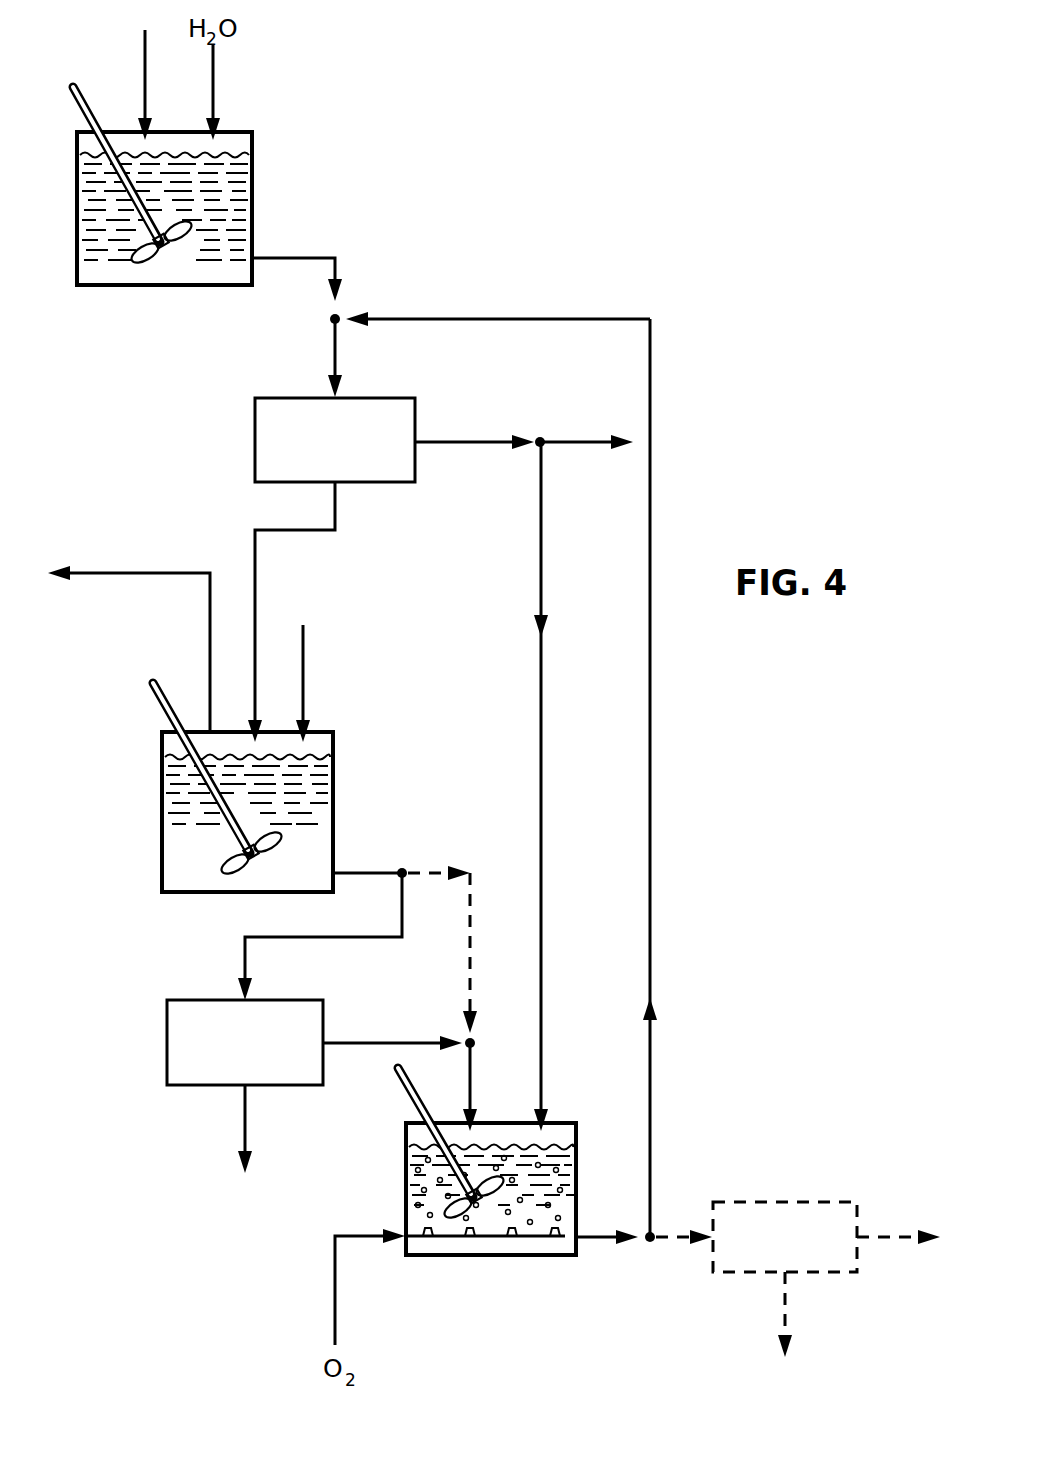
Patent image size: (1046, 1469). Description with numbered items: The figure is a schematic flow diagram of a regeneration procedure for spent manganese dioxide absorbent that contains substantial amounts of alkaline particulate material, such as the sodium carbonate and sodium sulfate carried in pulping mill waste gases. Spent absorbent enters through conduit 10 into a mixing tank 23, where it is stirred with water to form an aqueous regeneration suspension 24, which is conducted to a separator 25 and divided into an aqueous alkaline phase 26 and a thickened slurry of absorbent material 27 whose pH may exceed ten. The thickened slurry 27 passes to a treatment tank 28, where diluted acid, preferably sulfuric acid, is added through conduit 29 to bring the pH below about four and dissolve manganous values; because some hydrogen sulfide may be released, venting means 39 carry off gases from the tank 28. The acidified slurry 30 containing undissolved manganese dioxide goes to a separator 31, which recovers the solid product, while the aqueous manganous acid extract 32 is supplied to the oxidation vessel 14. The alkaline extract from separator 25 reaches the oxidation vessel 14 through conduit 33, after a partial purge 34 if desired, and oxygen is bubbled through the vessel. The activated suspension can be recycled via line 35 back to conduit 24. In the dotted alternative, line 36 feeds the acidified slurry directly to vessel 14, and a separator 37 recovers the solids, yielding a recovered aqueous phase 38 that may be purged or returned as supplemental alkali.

The conduit 10 is at (144, 65).
The mixing tank 23 is at (243, 171).
The suspension 24 is at (335, 349).
The separator 25 is at (268, 443).
The aqueous phase 26 is at (492, 440).
The thickened slurry of absorbent material 27 is at (256, 578).
The treatment tank 28 is at (163, 798).
The conduit 29 is at (305, 655).
The acidified slurry 30 is at (354, 871).
The separator 31 is at (180, 1032).
The aqueous Mn++ acid extract 32 is at (407, 1040).
The conduit 33 is at (540, 738).
The partial purge 34 is at (558, 440).
The recycle line 35 is at (456, 318).
The line 36 is at (428, 872).
The separator 37 is at (790, 1200).
The recovered aqueous phase 38 is at (893, 1237).
The venting means 39 is at (105, 572).
The oxidation vessel 14 is at (410, 1163).